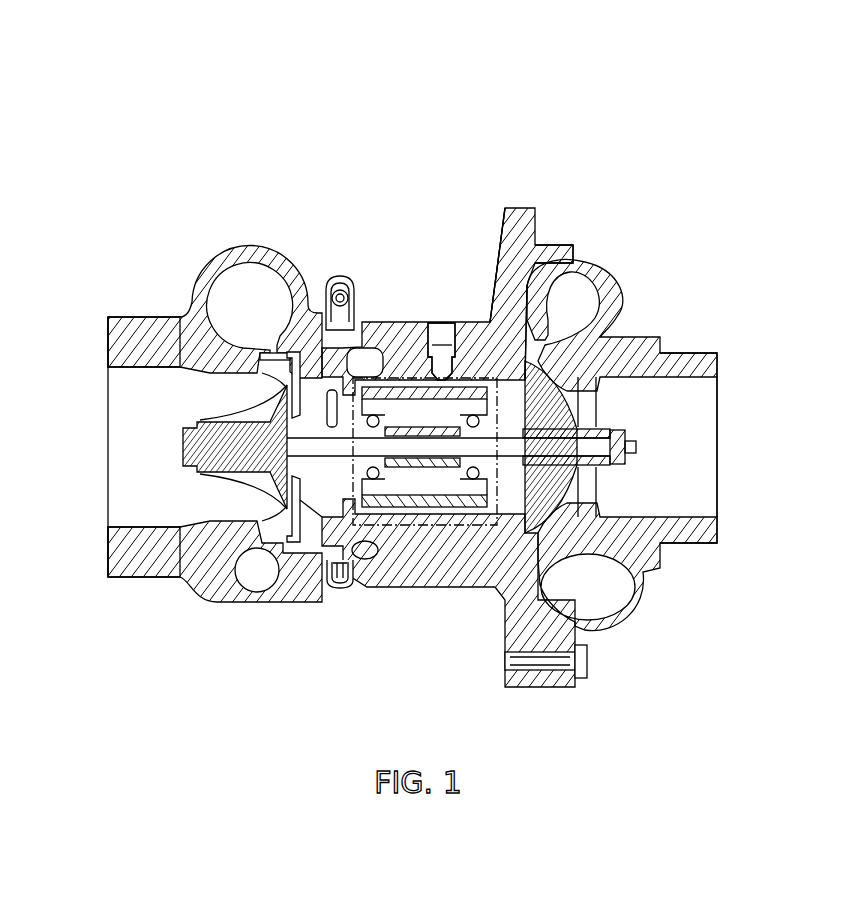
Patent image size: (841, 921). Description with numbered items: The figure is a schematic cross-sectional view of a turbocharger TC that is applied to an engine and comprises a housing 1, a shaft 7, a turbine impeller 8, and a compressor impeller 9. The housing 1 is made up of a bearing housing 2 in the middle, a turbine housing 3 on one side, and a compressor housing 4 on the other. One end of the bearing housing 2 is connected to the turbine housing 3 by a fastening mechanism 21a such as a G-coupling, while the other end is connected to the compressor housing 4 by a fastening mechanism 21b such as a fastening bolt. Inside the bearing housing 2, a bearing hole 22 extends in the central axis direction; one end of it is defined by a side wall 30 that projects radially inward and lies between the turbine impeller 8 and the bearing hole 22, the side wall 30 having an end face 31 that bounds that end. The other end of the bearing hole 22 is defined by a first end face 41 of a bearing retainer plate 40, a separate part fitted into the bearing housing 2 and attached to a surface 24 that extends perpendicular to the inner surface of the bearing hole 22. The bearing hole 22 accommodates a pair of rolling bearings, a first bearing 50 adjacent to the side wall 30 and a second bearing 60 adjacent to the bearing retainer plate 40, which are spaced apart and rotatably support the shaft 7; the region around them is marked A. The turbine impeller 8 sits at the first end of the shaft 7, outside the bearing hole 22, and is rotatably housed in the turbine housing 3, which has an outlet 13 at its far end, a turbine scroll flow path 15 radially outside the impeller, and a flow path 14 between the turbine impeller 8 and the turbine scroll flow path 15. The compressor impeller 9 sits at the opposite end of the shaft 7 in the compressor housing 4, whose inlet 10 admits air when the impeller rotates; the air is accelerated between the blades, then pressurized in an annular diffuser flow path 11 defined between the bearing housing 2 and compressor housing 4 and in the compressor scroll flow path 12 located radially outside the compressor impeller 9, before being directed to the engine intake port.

The turbocharger TC is at (155, 95).
The housing 1 is at (305, 155).
The bearing housing 2 is at (522, 206).
The turbine housing 3 is at (318, 250).
The compressor housing 4 is at (550, 247).
The shaft 7 is at (423, 447).
The turbine impeller 8 is at (118, 498).
The compressor impeller 9 is at (600, 405).
The inlet 10 is at (717, 508).
The diffuser flow path 11 is at (502, 315).
The compressor scroll flow path 12 is at (587, 277).
The outlet 13 is at (108, 400).
The flow path 14 is at (270, 350).
The turbine scroll flow path 15 is at (248, 247).
The fastening mechanism 21a is at (355, 292).
The fastening mechanism 21b is at (597, 668).
The bearing hole 22 is at (407, 477).
The surface 24 is at (470, 385).
The side wall 30 is at (318, 548).
The end face 31 is at (385, 497).
The bearing retainer plate 40 is at (490, 345).
The first end face 41 is at (434, 375).
The first bearing 50 is at (410, 370).
The second bearing 60 is at (445, 363).
The bearing region A is at (408, 525).